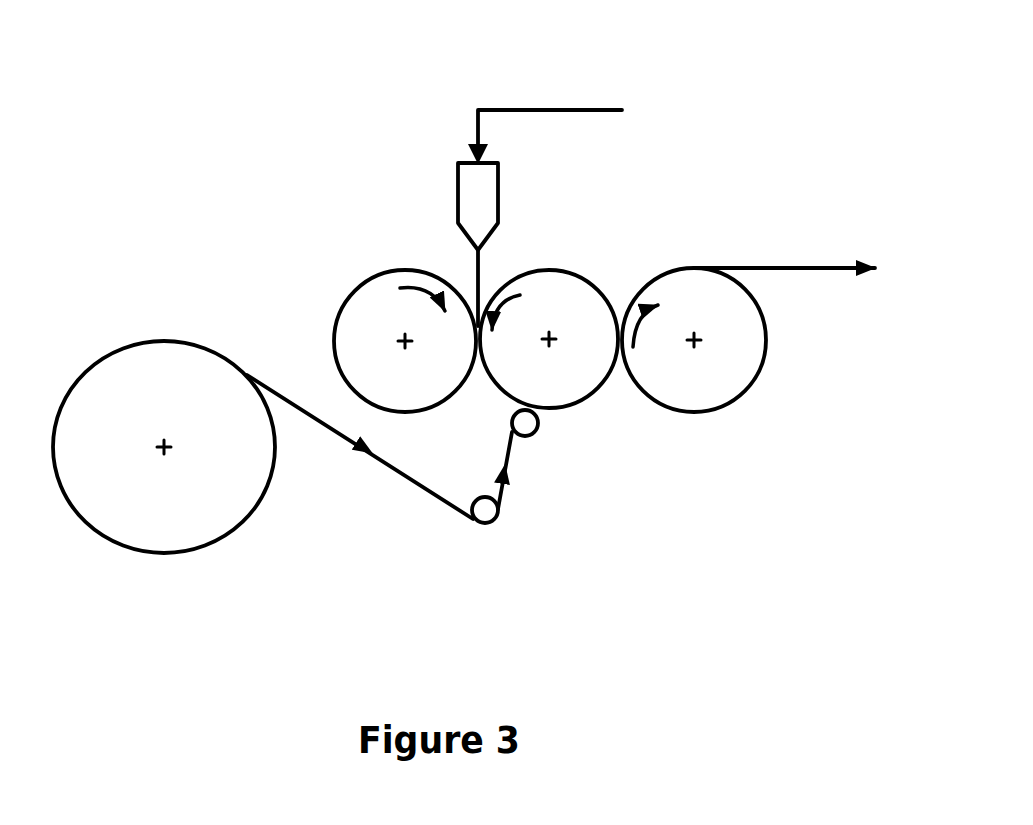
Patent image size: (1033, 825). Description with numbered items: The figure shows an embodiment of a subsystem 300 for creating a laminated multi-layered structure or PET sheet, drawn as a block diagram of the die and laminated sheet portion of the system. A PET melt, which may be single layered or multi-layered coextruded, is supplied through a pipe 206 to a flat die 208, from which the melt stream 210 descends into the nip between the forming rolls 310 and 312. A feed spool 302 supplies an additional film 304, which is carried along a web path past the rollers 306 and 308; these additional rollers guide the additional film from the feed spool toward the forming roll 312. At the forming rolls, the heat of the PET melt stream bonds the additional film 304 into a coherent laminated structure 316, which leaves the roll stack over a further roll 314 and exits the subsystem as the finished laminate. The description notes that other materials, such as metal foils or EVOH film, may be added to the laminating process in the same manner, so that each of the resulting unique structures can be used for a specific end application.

The pipe 206 is at (552, 108).
The flat die 208 is at (498, 190).
The material stream 210 is at (482, 249).
The subsystem 300 is at (770, 129).
The feed spool 302 is at (162, 554).
The additional film 304 is at (328, 430).
The roller 306 is at (481, 523).
The roller 308 is at (538, 430).
The forming roll 310 is at (357, 313).
The forming roll 312 is at (597, 401).
The roll 314 is at (742, 392).
The laminated structure 316 is at (815, 270).